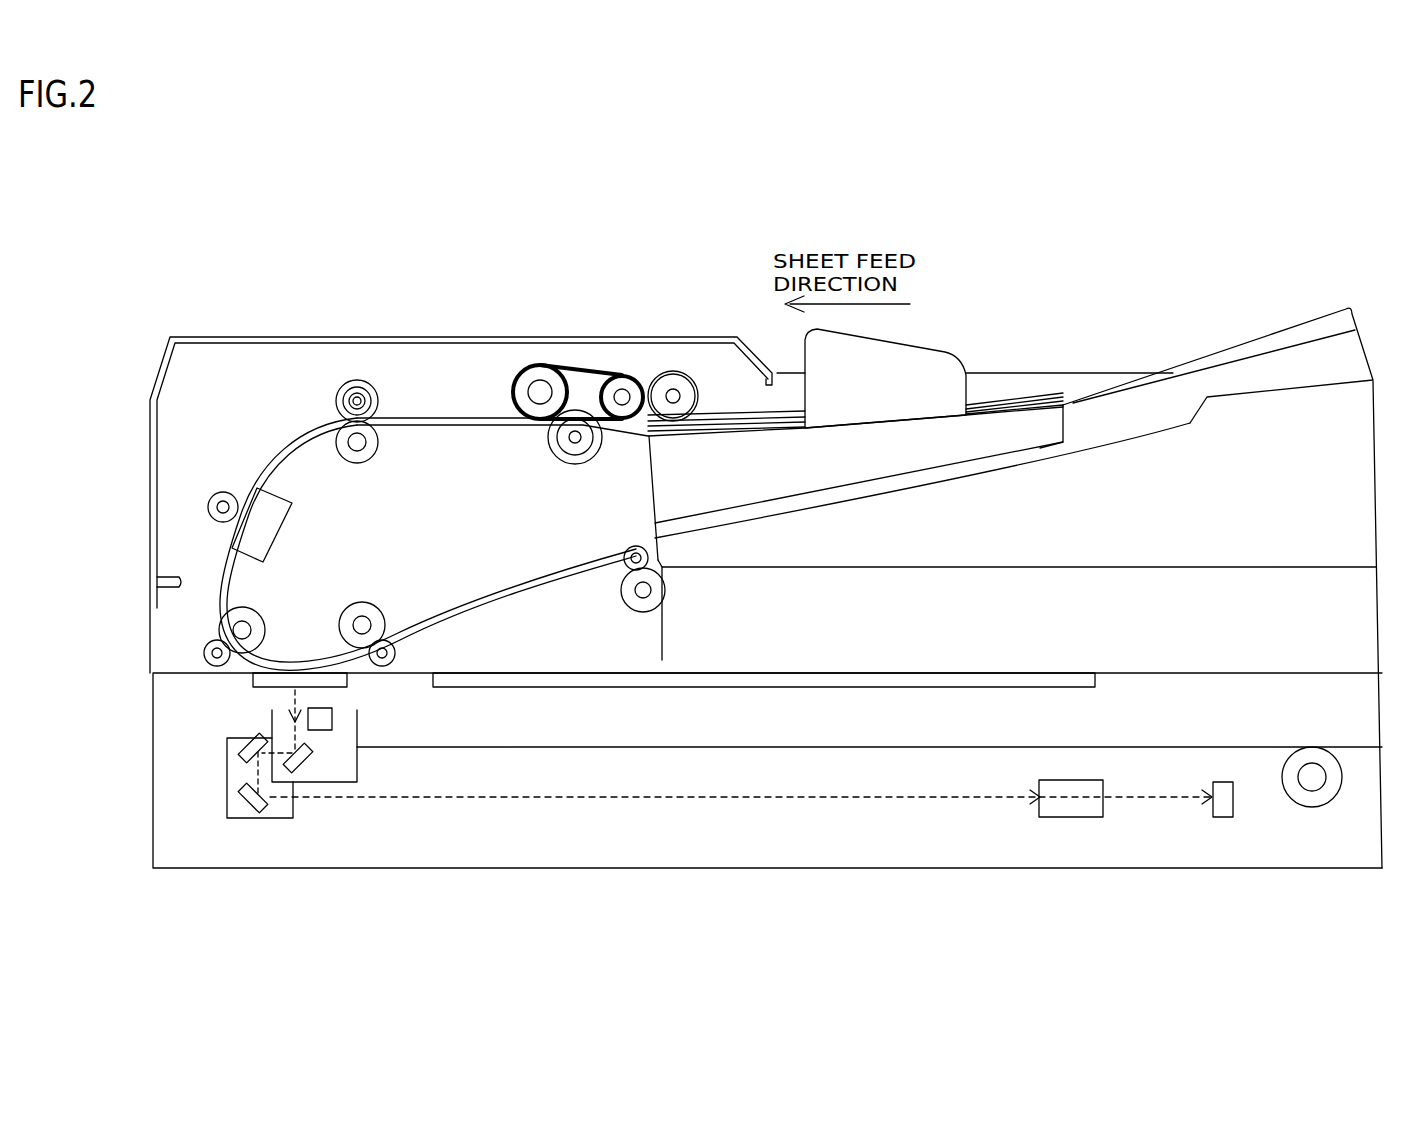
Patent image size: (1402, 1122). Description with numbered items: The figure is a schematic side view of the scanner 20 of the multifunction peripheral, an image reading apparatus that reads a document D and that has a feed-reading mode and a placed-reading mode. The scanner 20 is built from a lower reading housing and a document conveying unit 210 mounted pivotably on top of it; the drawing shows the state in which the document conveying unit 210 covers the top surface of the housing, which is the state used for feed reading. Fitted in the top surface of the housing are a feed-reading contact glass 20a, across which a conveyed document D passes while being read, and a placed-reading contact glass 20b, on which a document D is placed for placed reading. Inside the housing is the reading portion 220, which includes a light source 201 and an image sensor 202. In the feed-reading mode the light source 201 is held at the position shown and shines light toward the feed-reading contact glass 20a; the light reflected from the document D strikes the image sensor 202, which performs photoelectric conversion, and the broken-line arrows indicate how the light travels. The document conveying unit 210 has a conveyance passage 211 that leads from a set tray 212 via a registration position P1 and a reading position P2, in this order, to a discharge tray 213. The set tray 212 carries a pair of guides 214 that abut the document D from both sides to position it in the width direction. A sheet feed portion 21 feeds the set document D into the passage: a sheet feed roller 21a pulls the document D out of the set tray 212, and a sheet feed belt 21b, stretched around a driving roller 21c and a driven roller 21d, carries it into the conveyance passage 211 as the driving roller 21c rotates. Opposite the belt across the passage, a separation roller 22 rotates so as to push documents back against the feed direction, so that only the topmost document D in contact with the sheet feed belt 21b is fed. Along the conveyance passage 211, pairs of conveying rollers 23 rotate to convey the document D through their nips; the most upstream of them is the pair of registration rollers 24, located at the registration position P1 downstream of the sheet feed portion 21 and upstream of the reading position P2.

The scanner 20 is at (223, 331).
The document conveying unit 210 is at (199, 471).
The reading portion 220 is at (198, 712).
The conveyance passage 211 is at (410, 412).
The sheet feed portion 21 is at (621, 322).
The sheet feed roller 21a is at (698, 346).
The sheet feed belt 21b is at (590, 368).
The driving roller 21c is at (537, 368).
The driven roller 21d is at (623, 384).
The separation roller 22 is at (583, 447).
The pairs of conveying rollers 23 is at (250, 622).
The pair of registration rollers 24 is at (357, 455).
The set tray 212 is at (1095, 397).
The discharge tray 213 is at (971, 565).
The pair of guides 214 is at (945, 370).
The document D is at (1045, 393).
The registration position P1 is at (337, 413).
The reading position P2 is at (297, 663).
The feed-reading contact glass 20a is at (347, 680).
The placed-reading contact glass 20b is at (683, 688).
The light source 201 is at (322, 732).
The image sensor 202 is at (1222, 806).